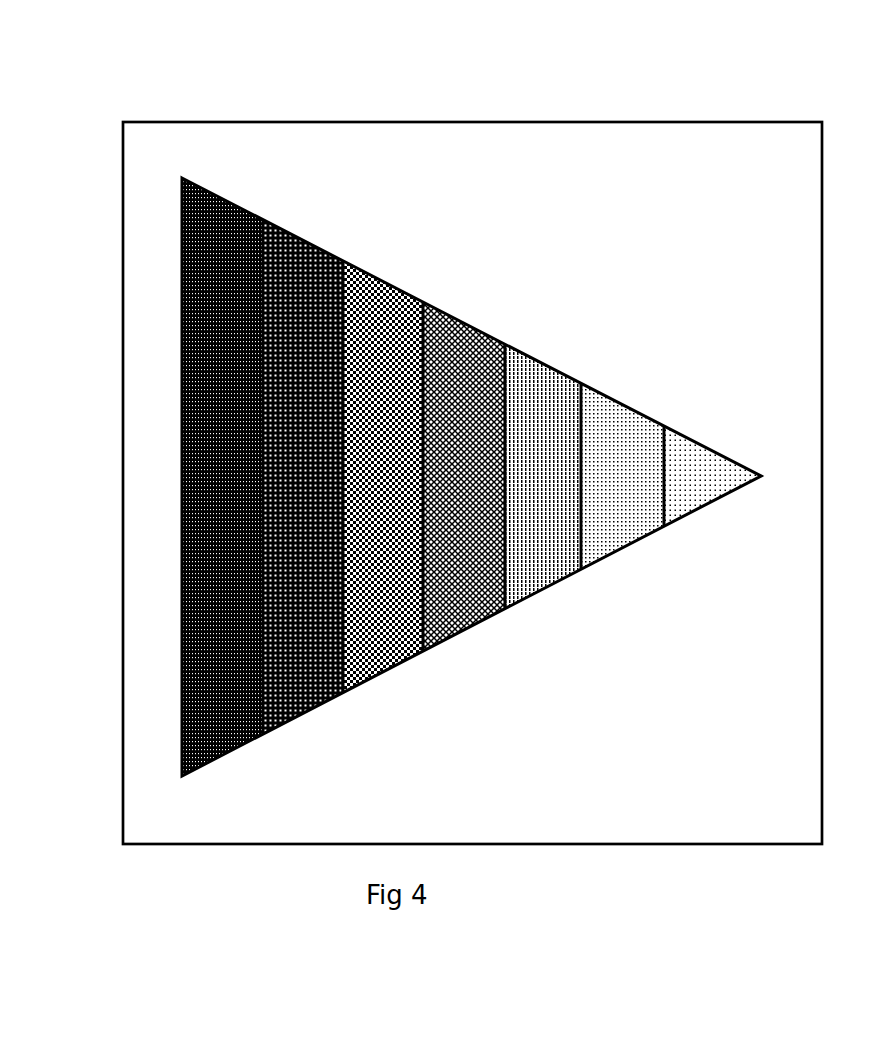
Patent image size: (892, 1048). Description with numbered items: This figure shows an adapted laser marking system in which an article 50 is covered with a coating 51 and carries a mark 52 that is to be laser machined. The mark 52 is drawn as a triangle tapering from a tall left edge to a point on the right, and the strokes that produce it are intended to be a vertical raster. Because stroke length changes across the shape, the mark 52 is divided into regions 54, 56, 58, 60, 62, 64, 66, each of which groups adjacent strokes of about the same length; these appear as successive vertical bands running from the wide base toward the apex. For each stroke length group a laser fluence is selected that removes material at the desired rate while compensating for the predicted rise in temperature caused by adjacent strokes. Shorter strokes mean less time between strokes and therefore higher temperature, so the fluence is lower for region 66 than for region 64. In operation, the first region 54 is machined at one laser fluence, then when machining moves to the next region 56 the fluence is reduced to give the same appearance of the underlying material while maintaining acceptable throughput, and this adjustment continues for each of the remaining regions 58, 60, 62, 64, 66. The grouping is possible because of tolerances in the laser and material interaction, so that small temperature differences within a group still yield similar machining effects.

The article 50 is at (117, 200).
The coating 51 is at (150, 298).
The mark 52 is at (173, 380).
The first region 54 is at (229, 197).
The region 56 is at (293, 232).
The region 58 is at (377, 282).
The region 60 is at (443, 328).
The region 62 is at (525, 372).
The region 64 is at (610, 412).
The region 66 is at (697, 460).